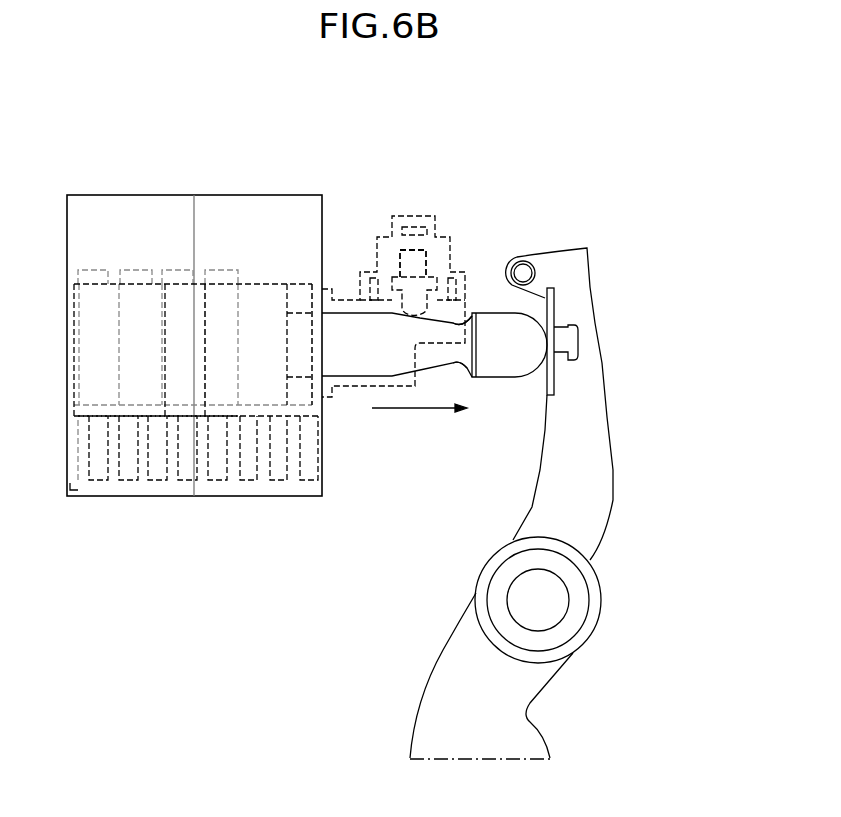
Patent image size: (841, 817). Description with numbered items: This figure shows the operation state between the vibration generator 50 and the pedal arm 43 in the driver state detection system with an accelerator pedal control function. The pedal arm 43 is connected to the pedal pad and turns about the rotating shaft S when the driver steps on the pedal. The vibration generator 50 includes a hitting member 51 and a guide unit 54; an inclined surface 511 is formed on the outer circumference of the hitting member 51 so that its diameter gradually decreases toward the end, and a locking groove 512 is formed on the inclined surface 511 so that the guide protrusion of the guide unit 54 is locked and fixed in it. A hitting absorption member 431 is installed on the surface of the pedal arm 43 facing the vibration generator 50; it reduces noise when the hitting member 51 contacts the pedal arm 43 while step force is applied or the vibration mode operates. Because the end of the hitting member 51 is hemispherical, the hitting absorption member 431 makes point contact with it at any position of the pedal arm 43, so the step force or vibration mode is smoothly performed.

The vibration generator 50 is at (199, 180).
The guide unit 54 is at (410, 199).
The hitting member 51 is at (488, 322).
The inclined surface 511 is at (427, 358).
The locking groove 512 is at (467, 370).
The hitting absorption member 431 is at (552, 312).
The pedal arm 43 is at (600, 492).
The rotating shaft S is at (540, 600).